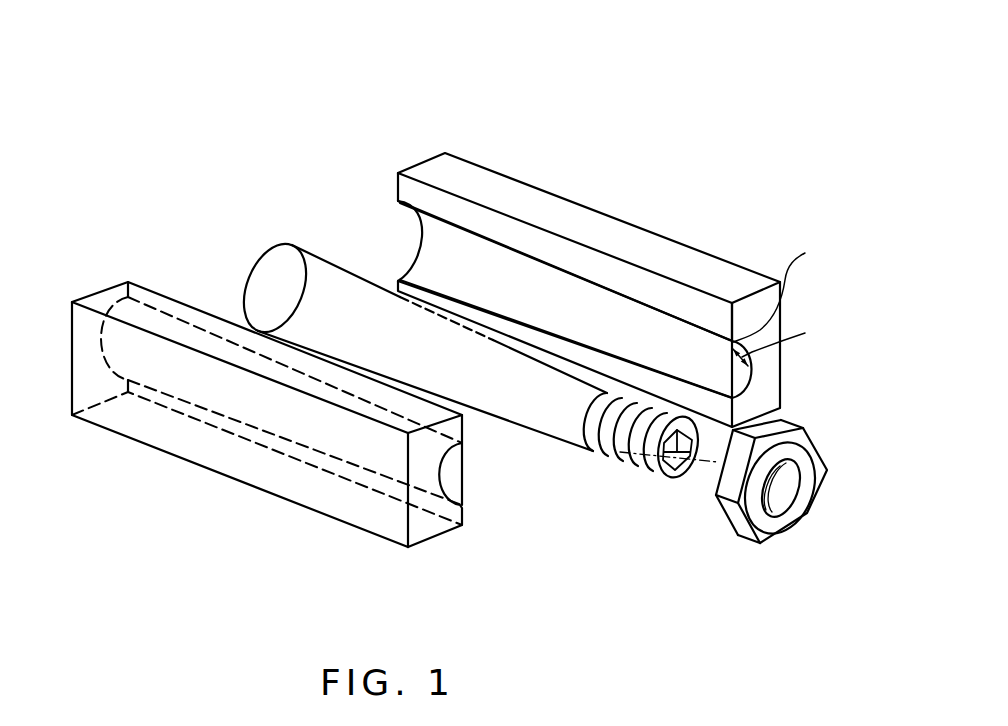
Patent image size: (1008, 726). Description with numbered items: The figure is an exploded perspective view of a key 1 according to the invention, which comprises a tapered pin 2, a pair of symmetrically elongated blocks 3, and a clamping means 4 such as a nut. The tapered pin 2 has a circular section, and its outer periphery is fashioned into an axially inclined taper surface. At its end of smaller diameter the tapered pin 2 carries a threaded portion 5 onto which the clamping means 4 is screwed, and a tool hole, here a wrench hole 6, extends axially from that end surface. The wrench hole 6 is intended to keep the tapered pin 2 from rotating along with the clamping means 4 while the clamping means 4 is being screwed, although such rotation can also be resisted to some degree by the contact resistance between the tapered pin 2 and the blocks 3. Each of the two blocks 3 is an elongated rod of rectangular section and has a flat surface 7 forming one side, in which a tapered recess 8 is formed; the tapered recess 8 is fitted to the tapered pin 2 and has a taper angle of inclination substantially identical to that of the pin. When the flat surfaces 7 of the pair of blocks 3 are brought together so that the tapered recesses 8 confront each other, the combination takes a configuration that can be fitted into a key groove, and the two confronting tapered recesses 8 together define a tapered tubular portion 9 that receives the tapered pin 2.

The key 1 is at (472, 307).
The tapered pin 2 is at (336, 264).
The blocks 3 is at (106, 284).
The clamping means 4 is at (810, 442).
The threaded portion 5 is at (613, 462).
The wrench hole 6 is at (676, 478).
The flat surface 7 is at (714, 312).
The tapered recess 8 is at (565, 248).
The tapered tubular portion 9 is at (568, 298).